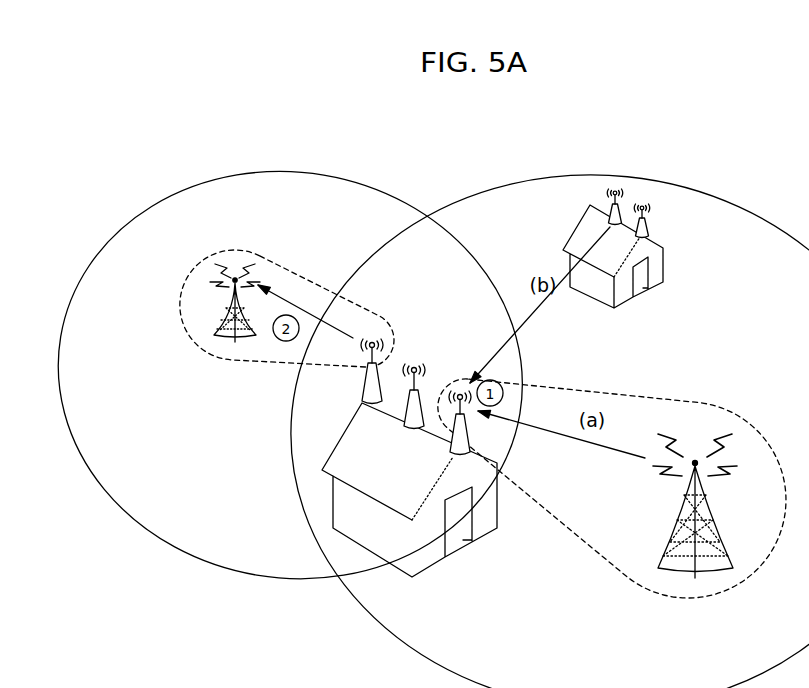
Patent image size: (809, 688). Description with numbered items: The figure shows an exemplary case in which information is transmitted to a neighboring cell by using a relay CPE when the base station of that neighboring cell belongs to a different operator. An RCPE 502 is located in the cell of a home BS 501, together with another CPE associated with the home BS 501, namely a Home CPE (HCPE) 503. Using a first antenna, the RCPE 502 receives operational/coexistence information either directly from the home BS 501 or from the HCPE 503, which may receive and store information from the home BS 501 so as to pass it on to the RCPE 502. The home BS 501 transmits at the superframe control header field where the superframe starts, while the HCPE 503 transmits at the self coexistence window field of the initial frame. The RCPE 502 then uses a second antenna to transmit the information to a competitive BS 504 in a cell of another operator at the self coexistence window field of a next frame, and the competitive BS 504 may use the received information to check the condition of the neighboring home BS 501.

The home BS 501 is at (697, 526).
The RCPE 502 is at (418, 472).
The Home CPE (HCPE) 503 is at (627, 264).
The competitive BS 504 is at (196, 336).